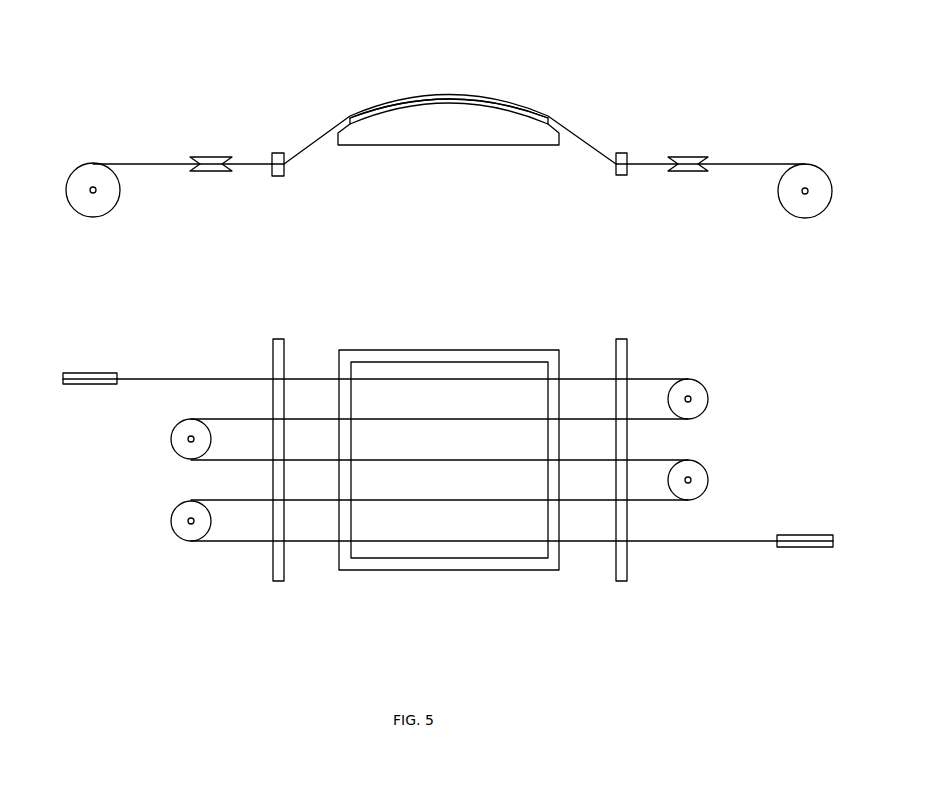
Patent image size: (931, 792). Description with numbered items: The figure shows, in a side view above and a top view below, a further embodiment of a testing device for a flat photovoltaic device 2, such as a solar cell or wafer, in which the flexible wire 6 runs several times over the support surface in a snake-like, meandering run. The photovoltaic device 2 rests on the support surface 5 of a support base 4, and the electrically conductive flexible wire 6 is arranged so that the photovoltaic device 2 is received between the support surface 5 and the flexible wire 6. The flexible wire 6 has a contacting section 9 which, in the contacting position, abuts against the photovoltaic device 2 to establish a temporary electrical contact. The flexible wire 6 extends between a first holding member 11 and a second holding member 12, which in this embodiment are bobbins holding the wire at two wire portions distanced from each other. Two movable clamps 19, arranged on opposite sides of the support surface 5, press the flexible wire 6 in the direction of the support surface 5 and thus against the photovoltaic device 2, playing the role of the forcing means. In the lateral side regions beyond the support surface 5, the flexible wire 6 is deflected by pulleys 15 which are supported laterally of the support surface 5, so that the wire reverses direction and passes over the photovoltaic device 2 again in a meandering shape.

The photovoltaic device 2 is at (470, 104).
The support base 4 is at (412, 123).
The support surface 5 is at (357, 563).
The flexible wire 6 is at (580, 137).
The contacting section 9 is at (491, 98).
The first holding member 11 is at (73, 212).
The second holding member 12 is at (830, 204).
The pulleys 15 is at (205, 173).
The movable clamps 19 is at (278, 178).